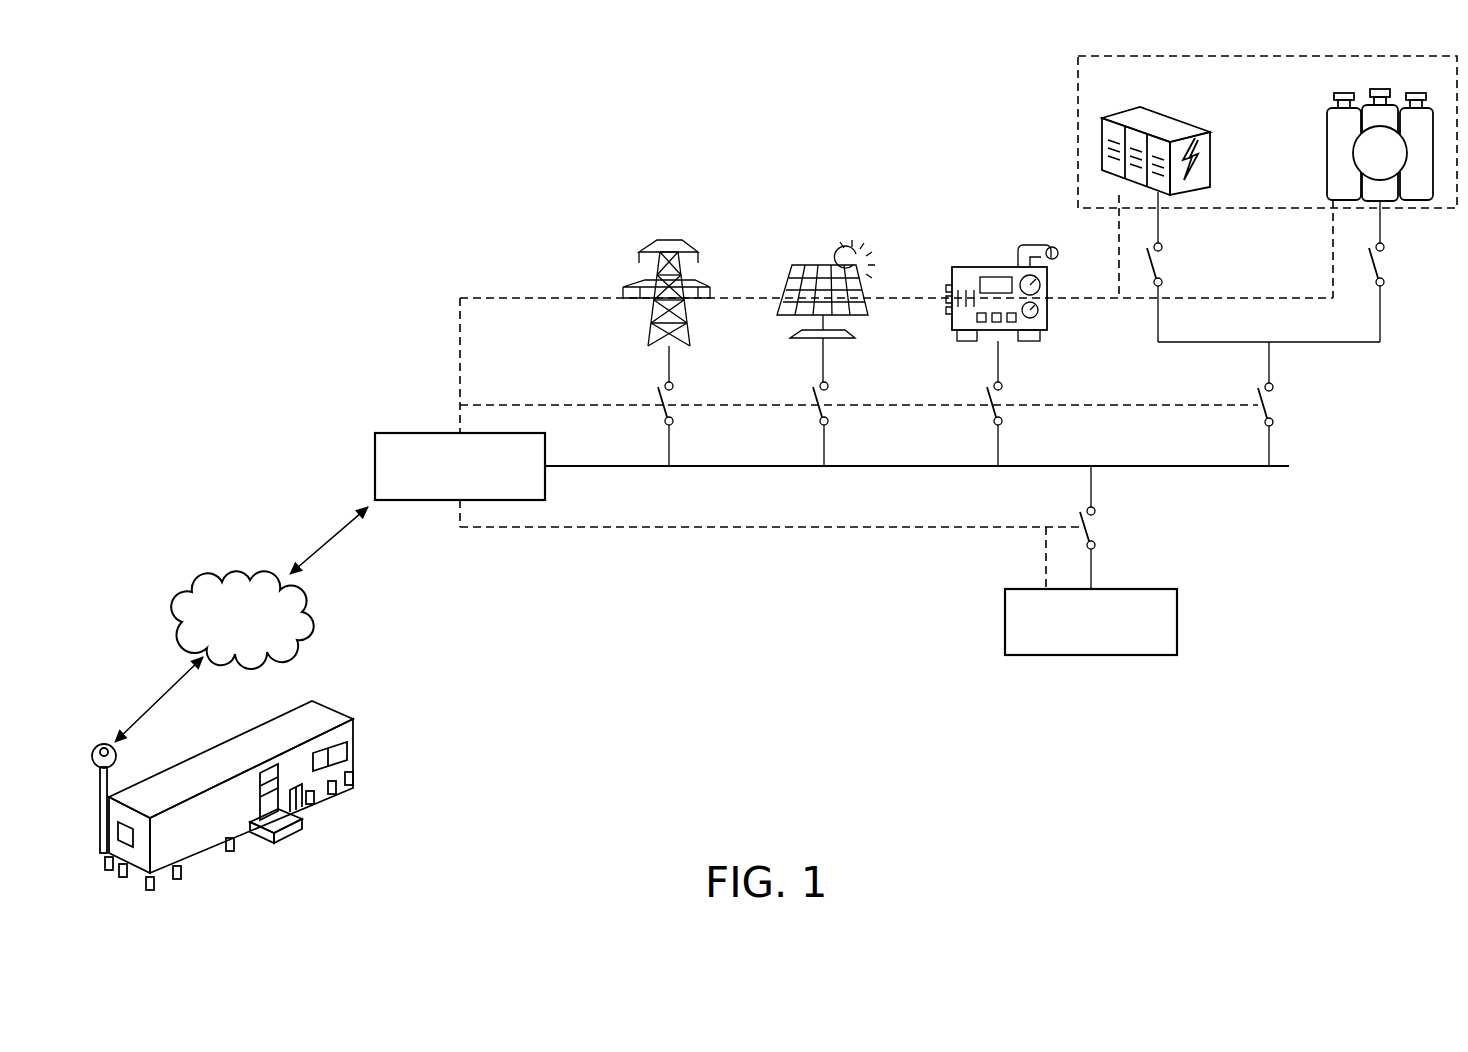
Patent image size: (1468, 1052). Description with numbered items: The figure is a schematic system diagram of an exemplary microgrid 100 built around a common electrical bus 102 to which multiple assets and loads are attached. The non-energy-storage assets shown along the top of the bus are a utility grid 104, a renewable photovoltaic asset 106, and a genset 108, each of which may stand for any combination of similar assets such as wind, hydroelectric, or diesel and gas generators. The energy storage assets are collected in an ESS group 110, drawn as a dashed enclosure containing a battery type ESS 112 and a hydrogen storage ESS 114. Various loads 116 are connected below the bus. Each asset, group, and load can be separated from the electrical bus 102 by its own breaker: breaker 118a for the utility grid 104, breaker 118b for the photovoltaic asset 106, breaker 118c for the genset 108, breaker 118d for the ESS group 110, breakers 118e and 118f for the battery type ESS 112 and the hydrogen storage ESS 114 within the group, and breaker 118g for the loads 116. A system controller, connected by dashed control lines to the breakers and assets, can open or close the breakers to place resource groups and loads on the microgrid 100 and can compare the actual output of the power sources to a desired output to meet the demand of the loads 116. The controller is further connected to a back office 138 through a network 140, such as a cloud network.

The microgrid 100 is at (198, 200).
The electrical bus 102 is at (920, 467).
The utility grid 104 is at (668, 237).
The photovoltaic asset 106 is at (805, 265).
The genset 108 is at (978, 267).
The ESS group 110 is at (1057, 102).
The battery type ESS 112 is at (1175, 118).
The hydrogen storage ESS 114 is at (1327, 170).
The loads 116 is at (1177, 622).
The breaker 118a is at (673, 399).
The breaker 118b is at (828, 399).
The breaker 118c is at (1002, 399).
The breaker 118d is at (1273, 400).
The breaker 118e is at (1162, 260).
The breaker 118f is at (1384, 260).
The breaker 118g is at (1095, 524).
The back office 138 is at (213, 758).
The network 140 is at (178, 614).